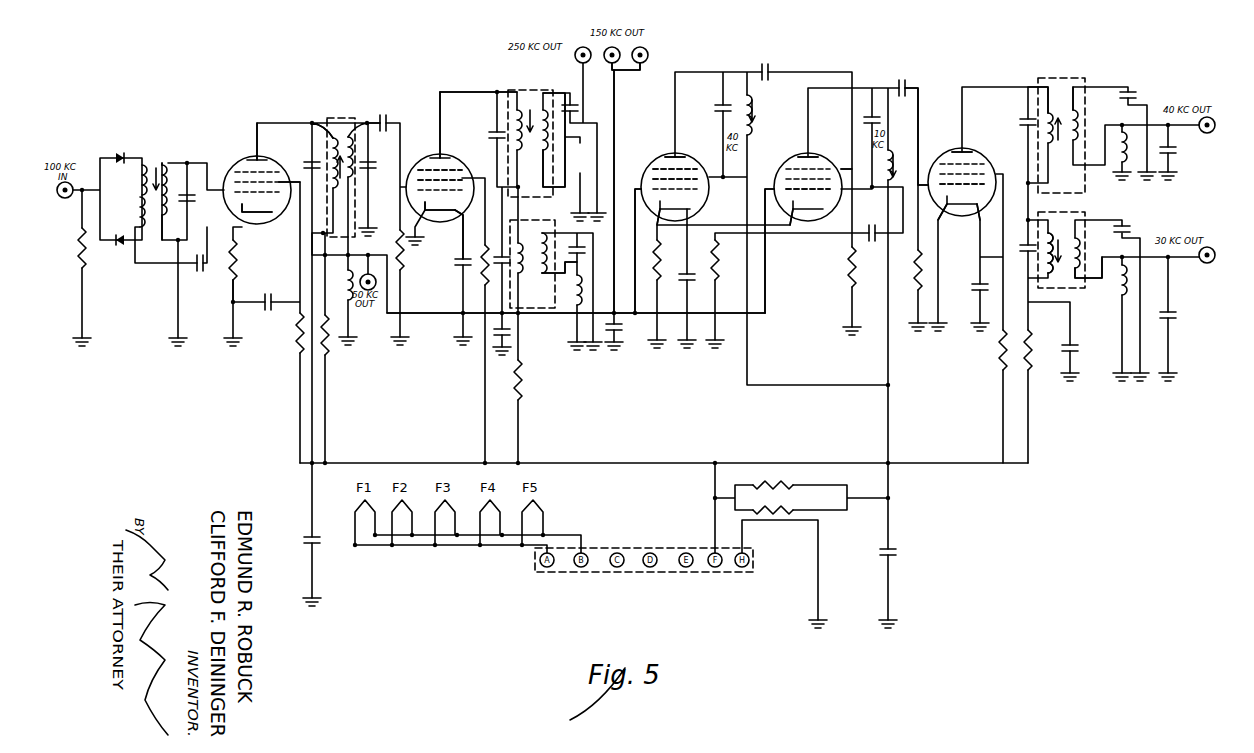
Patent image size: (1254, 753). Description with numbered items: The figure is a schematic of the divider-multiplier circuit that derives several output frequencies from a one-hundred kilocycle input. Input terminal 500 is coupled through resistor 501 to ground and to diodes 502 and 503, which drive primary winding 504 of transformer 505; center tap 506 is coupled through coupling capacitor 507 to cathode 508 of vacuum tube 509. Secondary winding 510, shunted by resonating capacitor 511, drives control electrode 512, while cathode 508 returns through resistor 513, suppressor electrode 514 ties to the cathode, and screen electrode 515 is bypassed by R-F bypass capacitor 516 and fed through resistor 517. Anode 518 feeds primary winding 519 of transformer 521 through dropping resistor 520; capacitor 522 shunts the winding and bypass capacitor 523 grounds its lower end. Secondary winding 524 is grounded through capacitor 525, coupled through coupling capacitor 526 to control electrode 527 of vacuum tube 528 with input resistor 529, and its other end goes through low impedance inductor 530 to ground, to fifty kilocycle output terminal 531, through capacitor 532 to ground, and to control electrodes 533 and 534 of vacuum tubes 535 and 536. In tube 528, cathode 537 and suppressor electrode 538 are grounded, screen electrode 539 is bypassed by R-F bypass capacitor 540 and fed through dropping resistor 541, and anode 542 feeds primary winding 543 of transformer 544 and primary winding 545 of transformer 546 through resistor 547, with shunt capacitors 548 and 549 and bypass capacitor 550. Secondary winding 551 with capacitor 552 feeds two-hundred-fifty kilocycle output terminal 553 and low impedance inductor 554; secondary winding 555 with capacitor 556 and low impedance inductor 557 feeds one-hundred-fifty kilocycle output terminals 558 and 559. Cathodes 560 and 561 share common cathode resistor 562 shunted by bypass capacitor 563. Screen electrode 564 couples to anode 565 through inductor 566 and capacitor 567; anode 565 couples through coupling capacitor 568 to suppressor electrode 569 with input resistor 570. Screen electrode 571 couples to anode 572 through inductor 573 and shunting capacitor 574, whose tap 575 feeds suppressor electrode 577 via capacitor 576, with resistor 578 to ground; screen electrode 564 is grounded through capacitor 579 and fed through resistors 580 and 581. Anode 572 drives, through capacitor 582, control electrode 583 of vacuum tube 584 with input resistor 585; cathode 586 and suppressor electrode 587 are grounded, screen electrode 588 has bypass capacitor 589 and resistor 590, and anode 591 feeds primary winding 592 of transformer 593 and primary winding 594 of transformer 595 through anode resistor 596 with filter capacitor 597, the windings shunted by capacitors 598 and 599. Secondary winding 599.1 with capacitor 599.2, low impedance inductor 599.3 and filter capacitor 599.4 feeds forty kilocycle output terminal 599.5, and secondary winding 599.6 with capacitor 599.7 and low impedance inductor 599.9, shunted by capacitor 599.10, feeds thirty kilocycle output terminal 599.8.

The input terminal 500 is at (72, 183).
The resistor 501 is at (81, 250).
The diode 502 is at (121, 155).
The diode 503 is at (118, 243).
The primary winding 504 is at (140, 178).
The transformer 505 is at (150, 166).
The center tap 506 is at (138, 203).
The coupling capacitor 507 is at (197, 266).
The cathode 508 is at (248, 258).
The vacuum tube 509 is at (245, 160).
The secondary winding 510 is at (170, 165).
The resonating capacitor 511 is at (190, 202).
The control electrode 512 is at (252, 213).
The resistor 513 is at (236, 263).
The suppressor electrode 514 is at (268, 168).
The screen electrode 515 is at (286, 180).
The R-F bypass capacitor 516 is at (271, 308).
The resistor 517 is at (298, 330).
The anode 518 is at (264, 131).
The primary winding 519 is at (325, 130).
The dropping resistor 520 is at (327, 343).
The transformer 521 is at (338, 140).
The capacitor 522 is at (312, 244).
The bypass capacitor 523 is at (308, 538).
The secondary winding 524 is at (366, 122).
The capacitor 525 is at (378, 158).
The coupling capacitor 526 is at (386, 117).
The control electrode 527 is at (436, 210).
The vacuum tube 528 is at (440, 158).
The input resistor 529 is at (398, 233).
The low impedance inductor 530 is at (350, 298).
The 50 kc. output terminal 531 is at (378, 283).
The capacitor 532 is at (617, 333).
The control electrode 533 is at (638, 186).
The control electrode 534 is at (826, 206).
The vacuum tube 535 is at (670, 158).
The vacuum tube 536 is at (805, 163).
The cathode 537 is at (447, 236).
The suppressor electrode 538 is at (450, 170).
The screen electrode 539 is at (460, 181).
The R-F bypass capacitor 540 is at (460, 265).
The dropping resistor 541 is at (478, 270).
The anode 542 is at (437, 158).
The primary winding 543 is at (496, 128).
The transformer 544 is at (529, 107).
The primary winding 545 is at (502, 245).
The transformer 546 is at (536, 273).
The resistor 547 is at (521, 378).
The capacitor 548 is at (496, 92).
The capacitor 549 is at (470, 313).
The bypass capacitor 550 is at (500, 330).
The secondary winding 551 is at (572, 77).
The capacitor 552 is at (576, 106).
The 250 kc. output terminal 553 is at (580, 47).
The low impedance inductor 554 is at (604, 137).
The secondary winding 555 is at (583, 237).
The capacitor 556 is at (575, 252).
The low impedance inductor 557 is at (584, 280).
The 150 kc. output terminal 558 is at (625, 70).
The 150 kc. output terminal 559 is at (646, 48).
The cathode 560 is at (694, 210).
The cathode 561 is at (766, 189).
The common cathode resistor 562 is at (660, 278).
The bypass capacitor 563 is at (690, 280).
The screen electrode 564 is at (680, 160).
The anode 565 is at (676, 157).
The inductor 566 is at (750, 95).
The capacitor 567 is at (721, 105).
The coupling capacitor 568 is at (770, 68).
The suppressor electrode 569 is at (836, 166).
The input resistor 570 is at (850, 262).
The screen electrode 571 is at (790, 178).
The anode 572 is at (805, 155).
The inductor 573 is at (891, 153).
The shunting capacitor 574 is at (872, 112).
The tap 575 is at (916, 160).
The capacitor 576 is at (870, 228).
The suppressor electrode 577 is at (690, 165).
The resistor 578 is at (718, 276).
The capacitor 579 is at (892, 546).
The resistor 580 is at (812, 484).
The resistor 581 is at (822, 510).
The capacitor 582 is at (904, 84).
The control electrode 583 is at (981, 220).
The vacuum tube 584 is at (970, 148).
The input resistor 585 is at (916, 266).
The cathode 586 is at (952, 221).
The suppressor electrode 587 is at (932, 172).
The screen electrode 588 is at (976, 160).
The bypass capacitor 589 is at (976, 285).
The resistor 590 is at (1000, 342).
The anode 591 is at (956, 150).
The primary winding 592 is at (1046, 110).
The transformer 593 is at (1057, 92).
The primary winding 594 is at (1020, 236).
The transformer 595 is at (1086, 232).
The anode resistor 596 is at (1032, 345).
The filter capacitor 597 is at (1072, 350).
The capacitor 598 is at (1026, 118).
The capacitor 599 is at (1028, 253).
The secondary winding 599.1 is at (1076, 110).
The capacitor 599.2 is at (1130, 92).
The low impedance inductor 599.3 is at (1130, 120).
The filter capacitor 599.4 is at (1172, 152).
The 40 kc. output terminal 599.5 is at (1208, 133).
The secondary winding 599.6 is at (1084, 238).
The capacitor 599.7 is at (1128, 228).
The 30 kc. output terminal 599.8 is at (1207, 263).
The low impedance inductor 599.9 is at (1118, 292).
The capacitor 599.10 is at (1172, 320).